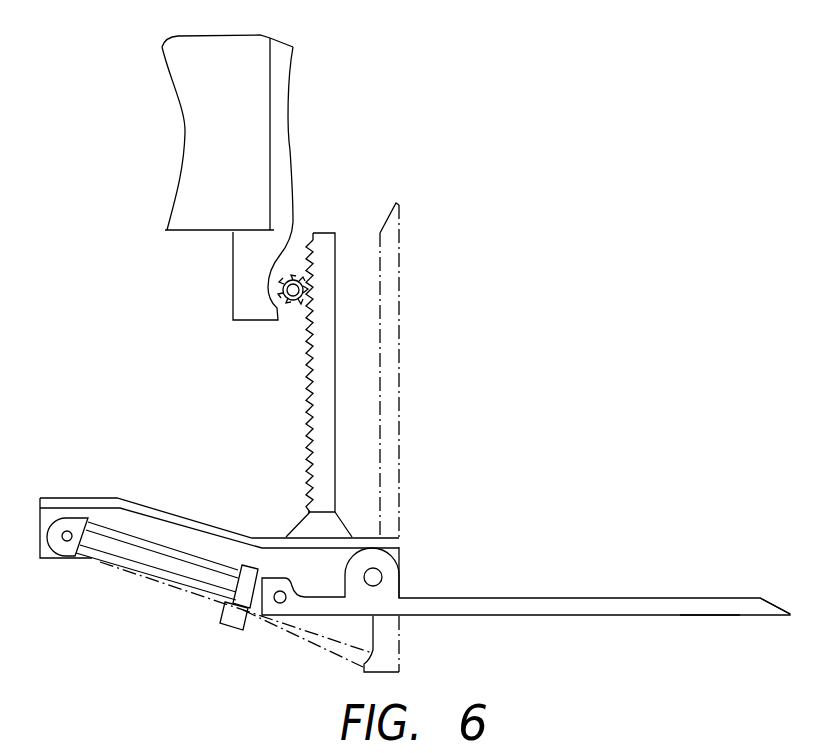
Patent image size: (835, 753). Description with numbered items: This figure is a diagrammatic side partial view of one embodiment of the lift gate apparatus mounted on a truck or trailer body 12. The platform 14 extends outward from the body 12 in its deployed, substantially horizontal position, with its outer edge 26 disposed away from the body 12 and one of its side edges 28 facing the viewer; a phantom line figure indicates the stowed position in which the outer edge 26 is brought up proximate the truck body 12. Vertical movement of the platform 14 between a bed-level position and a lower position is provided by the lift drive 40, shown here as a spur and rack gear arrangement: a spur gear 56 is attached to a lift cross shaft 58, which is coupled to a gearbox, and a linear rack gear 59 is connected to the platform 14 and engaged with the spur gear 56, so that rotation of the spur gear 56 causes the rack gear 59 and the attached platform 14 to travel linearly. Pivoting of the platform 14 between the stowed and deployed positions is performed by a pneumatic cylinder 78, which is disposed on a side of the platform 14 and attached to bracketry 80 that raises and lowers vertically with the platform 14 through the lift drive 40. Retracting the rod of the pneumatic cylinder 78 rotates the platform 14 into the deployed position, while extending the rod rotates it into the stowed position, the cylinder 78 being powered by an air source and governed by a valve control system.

The truck or trailer body 12 is at (163, 50).
The platform 14 is at (613, 596).
The outer edge 26 is at (779, 605).
The side edges 28 is at (710, 608).
The lift drive 40 is at (273, 385).
The spur gear 56 is at (297, 310).
The lift cross shaft 58 is at (283, 282).
The linear rack gear 59 is at (308, 417).
The pneumatic cylinder 78 is at (107, 562).
The bracketry 80 is at (105, 497).